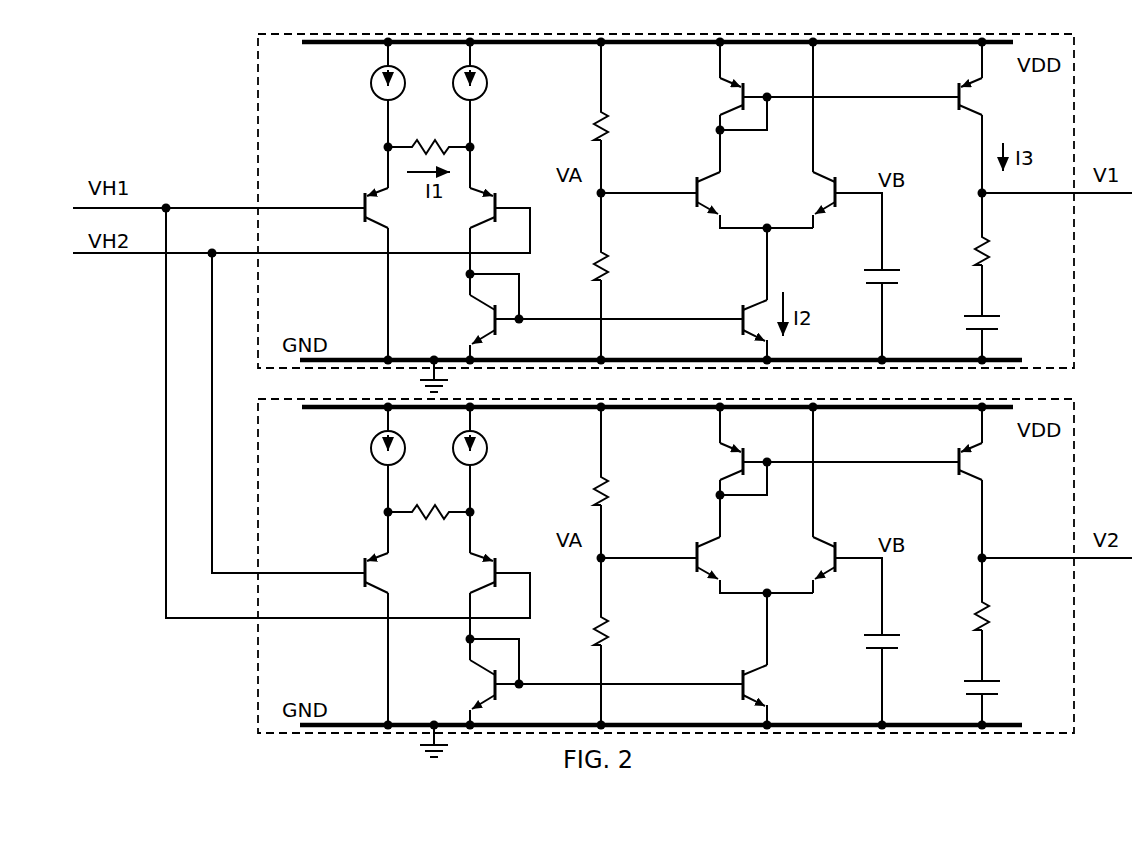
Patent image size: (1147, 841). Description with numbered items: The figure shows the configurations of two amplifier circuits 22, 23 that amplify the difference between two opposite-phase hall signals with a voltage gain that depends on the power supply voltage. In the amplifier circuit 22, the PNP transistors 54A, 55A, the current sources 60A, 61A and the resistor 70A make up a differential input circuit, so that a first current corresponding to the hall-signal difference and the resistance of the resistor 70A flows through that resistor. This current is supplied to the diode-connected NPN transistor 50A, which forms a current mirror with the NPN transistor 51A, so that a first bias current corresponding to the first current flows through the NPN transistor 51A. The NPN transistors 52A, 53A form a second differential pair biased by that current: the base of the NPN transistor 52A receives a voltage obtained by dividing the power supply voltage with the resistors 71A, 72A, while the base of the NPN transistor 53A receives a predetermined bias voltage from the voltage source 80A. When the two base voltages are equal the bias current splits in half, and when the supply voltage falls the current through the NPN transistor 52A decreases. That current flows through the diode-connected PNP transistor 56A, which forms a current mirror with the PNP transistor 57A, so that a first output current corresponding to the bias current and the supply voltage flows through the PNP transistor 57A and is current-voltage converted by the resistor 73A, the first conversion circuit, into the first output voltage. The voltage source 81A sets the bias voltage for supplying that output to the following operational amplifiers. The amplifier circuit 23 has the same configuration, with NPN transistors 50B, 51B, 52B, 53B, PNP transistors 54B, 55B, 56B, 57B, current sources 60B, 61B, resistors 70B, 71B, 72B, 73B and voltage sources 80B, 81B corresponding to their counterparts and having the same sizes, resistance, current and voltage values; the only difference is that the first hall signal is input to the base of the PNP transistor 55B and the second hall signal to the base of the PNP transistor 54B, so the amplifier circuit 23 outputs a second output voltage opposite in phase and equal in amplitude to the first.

The amplifier circuit 22 is at (1075, 120).
The amplifier circuit 23 is at (695, 566).
The NPN transistor 50A is at (475, 303).
The NPN transistor 50B is at (473, 685).
The NPN transistor 51A is at (760, 300).
The NPN transistor 51B is at (782, 685).
The NPN transistor 52A is at (690, 213).
The NPN transistor 52B is at (687, 577).
The NPN transistor 53A is at (834, 179).
The NPN transistor 53B is at (844, 541).
The PNP transistor 54A is at (368, 191).
The PNP transistor 54B is at (361, 554).
The PNP transistor 55A is at (491, 190).
The PNP transistor 55B is at (502, 553).
The PNP transistor 56A is at (728, 81).
The PNP transistor 56B is at (705, 461).
The PNP transistor 57A is at (977, 82).
The PNP transistor 57B is at (995, 461).
The current source 60A is at (372, 82).
The current source 60B is at (361, 439).
The current source 61A is at (488, 80).
The current source 61B is at (498, 445).
The resistor 70A is at (420, 138).
The resistor 70B is at (429, 533).
The resistor 71A is at (612, 122).
The resistor 71B is at (636, 491).
The resistor 72A is at (610, 264).
The resistor 72B is at (639, 633).
The resistor 73A is at (990, 258).
The resistor 73B is at (1017, 626).
The voltage source 80A is at (866, 267).
The voltage source 80B is at (864, 620).
The voltage source 81A is at (1000, 320).
The voltage source 81B is at (1011, 696).